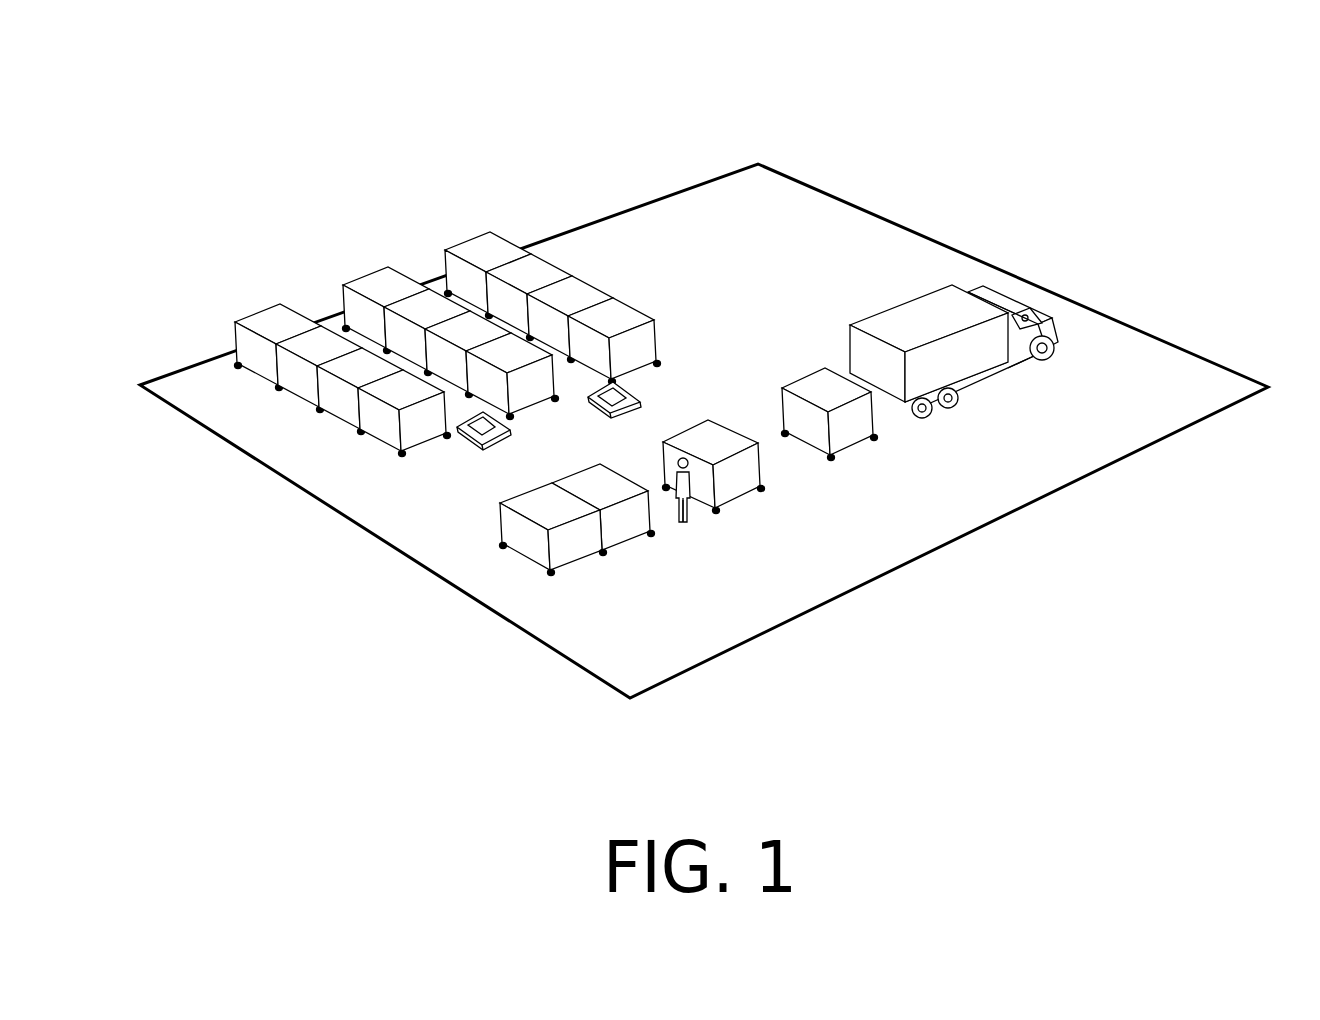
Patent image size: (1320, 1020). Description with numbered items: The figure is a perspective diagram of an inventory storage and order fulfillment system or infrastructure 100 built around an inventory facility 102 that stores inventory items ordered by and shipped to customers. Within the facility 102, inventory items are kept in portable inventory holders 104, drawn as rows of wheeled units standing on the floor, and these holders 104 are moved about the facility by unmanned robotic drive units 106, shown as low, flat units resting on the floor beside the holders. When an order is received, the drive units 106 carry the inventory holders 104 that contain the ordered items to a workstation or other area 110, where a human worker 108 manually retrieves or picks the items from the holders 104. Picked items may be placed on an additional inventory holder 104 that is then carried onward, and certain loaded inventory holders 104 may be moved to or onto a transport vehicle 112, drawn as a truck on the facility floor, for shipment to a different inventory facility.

The inventory storage and order fulfillment system 100 is at (486, 99).
The inventory facility 102 is at (1188, 394).
The portable inventory holder 104 is at (535, 268).
The robotic drive unit 106 is at (590, 400).
The human worker 108 is at (683, 525).
The workstation 110 is at (661, 603).
The transport vehicle 112 is at (917, 308).